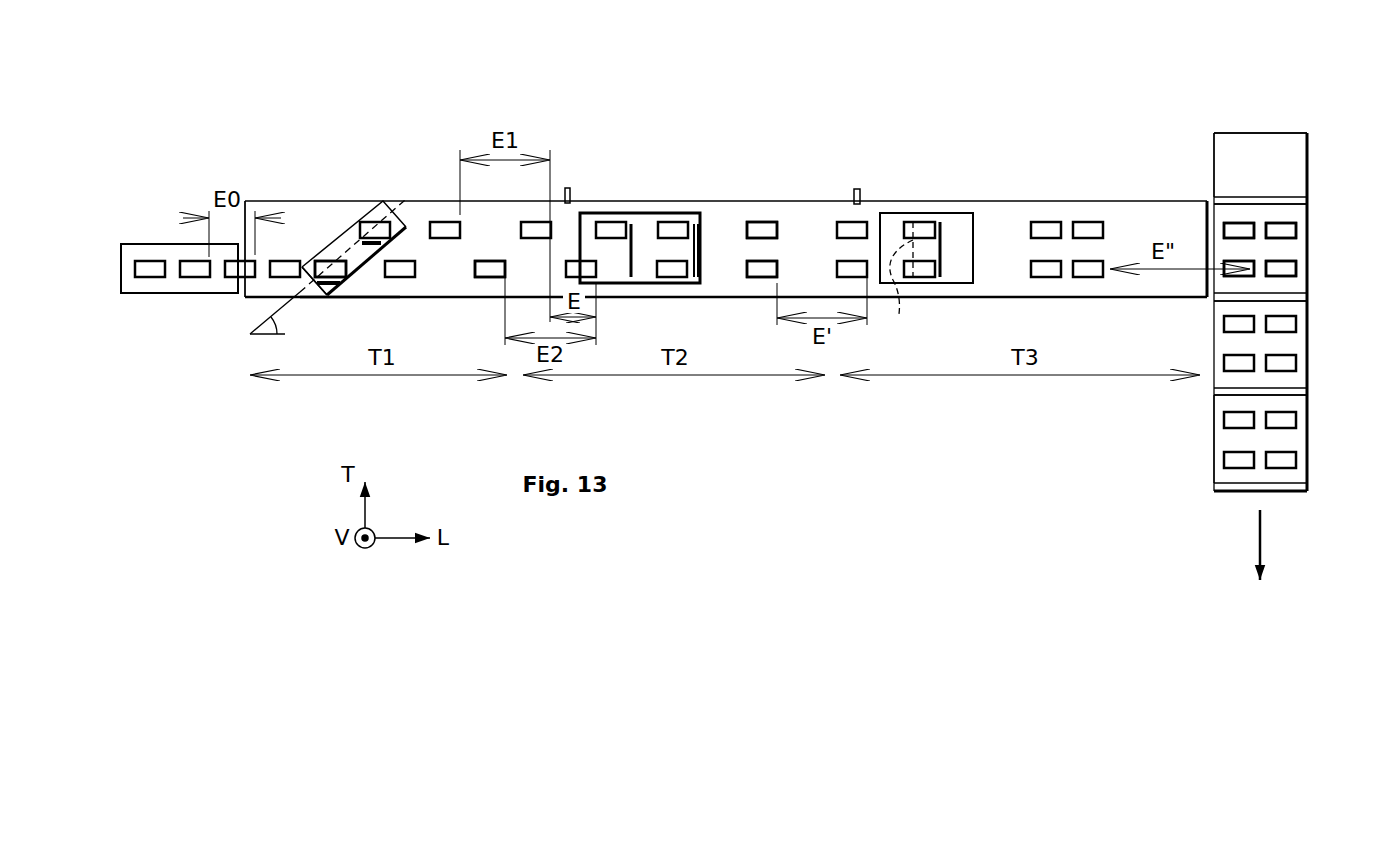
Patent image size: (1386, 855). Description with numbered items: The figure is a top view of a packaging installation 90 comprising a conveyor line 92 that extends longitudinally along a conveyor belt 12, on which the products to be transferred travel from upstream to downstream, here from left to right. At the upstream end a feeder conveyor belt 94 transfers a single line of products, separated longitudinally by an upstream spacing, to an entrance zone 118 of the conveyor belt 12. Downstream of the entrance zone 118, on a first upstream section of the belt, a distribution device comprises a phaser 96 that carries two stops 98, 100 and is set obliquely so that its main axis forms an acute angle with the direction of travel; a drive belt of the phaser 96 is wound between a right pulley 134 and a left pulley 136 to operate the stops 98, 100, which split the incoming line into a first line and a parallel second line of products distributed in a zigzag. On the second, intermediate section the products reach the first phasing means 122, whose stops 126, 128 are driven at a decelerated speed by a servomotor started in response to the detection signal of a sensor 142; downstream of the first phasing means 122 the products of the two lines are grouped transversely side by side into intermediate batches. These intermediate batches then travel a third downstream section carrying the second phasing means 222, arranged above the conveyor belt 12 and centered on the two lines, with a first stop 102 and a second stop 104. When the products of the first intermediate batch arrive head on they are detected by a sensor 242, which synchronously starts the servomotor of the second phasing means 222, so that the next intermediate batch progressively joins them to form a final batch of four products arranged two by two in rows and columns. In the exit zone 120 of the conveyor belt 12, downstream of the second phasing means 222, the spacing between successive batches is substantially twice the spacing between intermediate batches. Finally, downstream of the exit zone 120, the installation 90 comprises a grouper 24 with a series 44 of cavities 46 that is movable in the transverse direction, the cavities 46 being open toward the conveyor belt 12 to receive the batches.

The conveyor belt 12 is at (353, 210).
The grouper 24 is at (1198, 451).
The series of cavities 44 is at (1318, 189).
The cavity 46 is at (1265, 147).
The packaging installation 90 is at (649, 82).
The conveyor line 92 is at (534, 126).
The feeder conveyor belt 94 is at (124, 280).
The phaser 96 is at (349, 306).
The stop 98 is at (367, 249).
The stop 100 is at (308, 266).
The first stop 102 is at (942, 222).
The second stop 104 is at (897, 279).
The entrance zone 118 is at (282, 204).
The exit zone 120 is at (1127, 172).
The first phasing means 122 is at (613, 186).
The stop 126 is at (699, 230).
The stop 128 is at (632, 224).
The right pulley 134 is at (333, 294).
The left pulley 136 is at (383, 250).
The sensor 142 is at (570, 195).
The second phasing means 222 is at (924, 200).
The sensor 242 is at (856, 191).